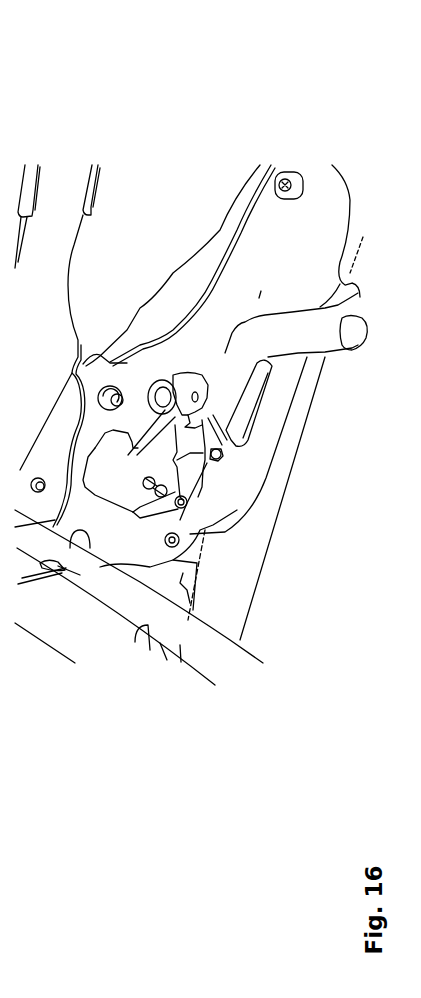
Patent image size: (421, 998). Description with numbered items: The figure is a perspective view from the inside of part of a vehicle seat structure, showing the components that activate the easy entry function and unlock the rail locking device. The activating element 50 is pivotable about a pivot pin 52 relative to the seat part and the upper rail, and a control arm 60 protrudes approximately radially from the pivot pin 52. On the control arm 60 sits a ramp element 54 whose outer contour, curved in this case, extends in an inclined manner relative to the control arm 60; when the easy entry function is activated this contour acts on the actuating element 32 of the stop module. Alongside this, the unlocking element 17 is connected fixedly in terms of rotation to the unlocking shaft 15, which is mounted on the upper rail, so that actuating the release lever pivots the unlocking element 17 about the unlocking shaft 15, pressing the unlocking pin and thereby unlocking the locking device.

The unlocking shaft 15 is at (366, 334).
The unlocking element 17 is at (242, 353).
The actuating element 32 is at (216, 456).
The activating element 50 is at (130, 470).
The pivot pin 52 is at (192, 452).
The ramp element 54 is at (193, 458).
The control arm 60 is at (178, 402).